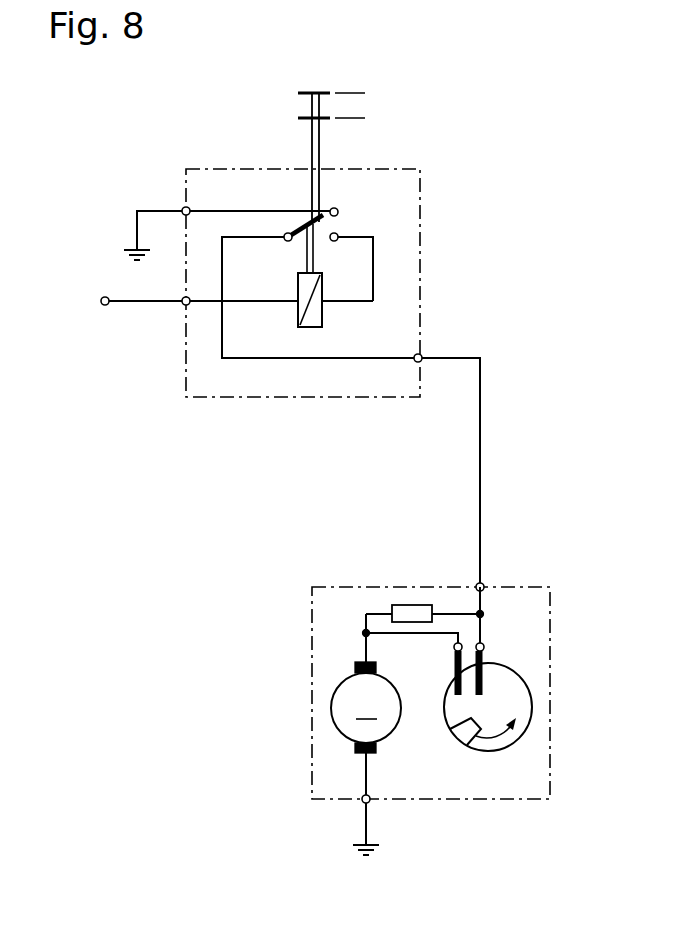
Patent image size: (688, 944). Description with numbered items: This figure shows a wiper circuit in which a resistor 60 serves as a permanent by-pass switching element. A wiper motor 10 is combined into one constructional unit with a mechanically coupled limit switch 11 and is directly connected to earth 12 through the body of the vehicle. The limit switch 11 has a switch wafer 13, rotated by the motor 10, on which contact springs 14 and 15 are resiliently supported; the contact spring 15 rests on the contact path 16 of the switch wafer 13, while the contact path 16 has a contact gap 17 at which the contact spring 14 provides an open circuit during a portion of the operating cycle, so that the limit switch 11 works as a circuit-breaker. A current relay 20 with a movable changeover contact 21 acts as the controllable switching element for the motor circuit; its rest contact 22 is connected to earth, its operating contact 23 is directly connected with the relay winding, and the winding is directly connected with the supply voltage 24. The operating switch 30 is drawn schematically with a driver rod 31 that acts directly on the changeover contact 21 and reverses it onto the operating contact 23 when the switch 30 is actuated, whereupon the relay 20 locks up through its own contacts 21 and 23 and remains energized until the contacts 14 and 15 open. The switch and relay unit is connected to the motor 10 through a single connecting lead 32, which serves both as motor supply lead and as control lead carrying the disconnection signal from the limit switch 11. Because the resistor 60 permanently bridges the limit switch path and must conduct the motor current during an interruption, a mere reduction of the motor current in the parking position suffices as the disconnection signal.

The wiper motor 10 is at (341, 734).
The limit switch 11 is at (485, 772).
The earth 12 is at (360, 842).
The switch wafer 13 is at (531, 692).
The contact spring 14 is at (455, 664).
The contact spring 15 is at (483, 658).
The contact path 16 is at (503, 726).
The contact gap 17 is at (462, 736).
The current relay 20 is at (307, 320).
The changeover contact 21 is at (326, 222).
The rest contact 22 is at (337, 208).
The operating contact 23 is at (338, 241).
The supply voltage 24 is at (105, 306).
The operating switch 30 is at (403, 100).
The driver rod 31 is at (308, 150).
The connecting lead 32 is at (480, 500).
The resistor 60 is at (413, 605).